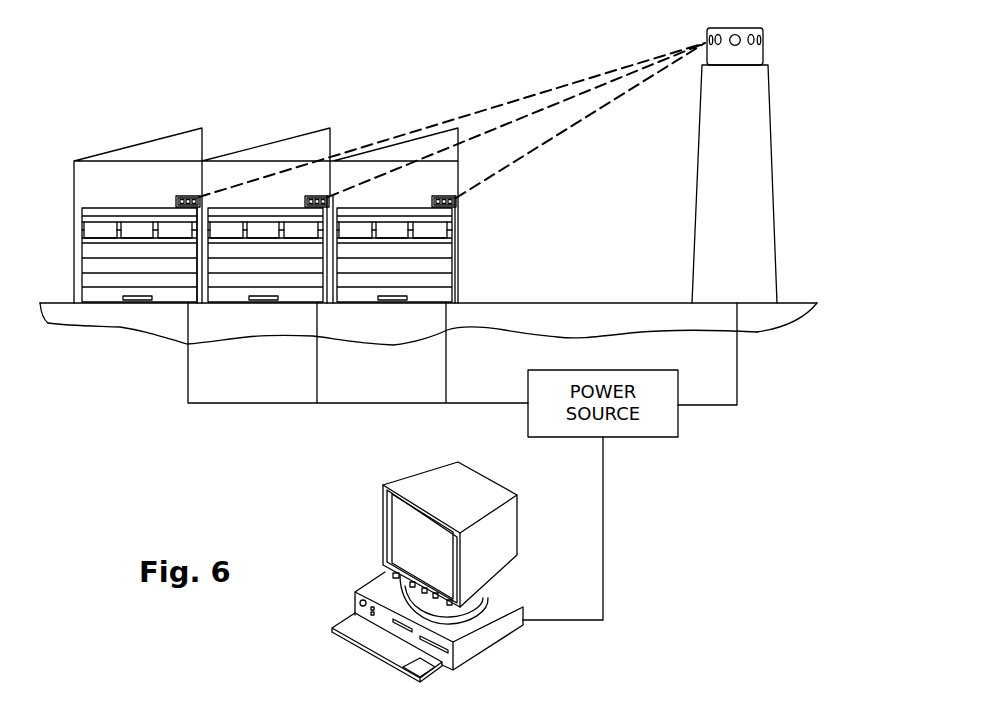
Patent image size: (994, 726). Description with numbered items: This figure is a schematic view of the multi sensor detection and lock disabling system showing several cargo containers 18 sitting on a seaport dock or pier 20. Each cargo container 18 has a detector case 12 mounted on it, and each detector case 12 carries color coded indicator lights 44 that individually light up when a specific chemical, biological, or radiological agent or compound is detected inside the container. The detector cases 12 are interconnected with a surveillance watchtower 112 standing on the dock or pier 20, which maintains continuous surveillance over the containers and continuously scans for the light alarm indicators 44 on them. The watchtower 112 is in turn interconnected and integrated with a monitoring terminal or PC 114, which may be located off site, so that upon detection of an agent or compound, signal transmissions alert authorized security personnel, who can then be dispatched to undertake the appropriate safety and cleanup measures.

The detector case 12 is at (430, 134).
The cargo container 18 is at (95, 207).
The seaport dock or pier 20 is at (52, 302).
The color coded indicator lights 44 is at (190, 194).
The surveillance watchtower 112 is at (695, 192).
The monitoring terminal or PC 114 is at (383, 502).